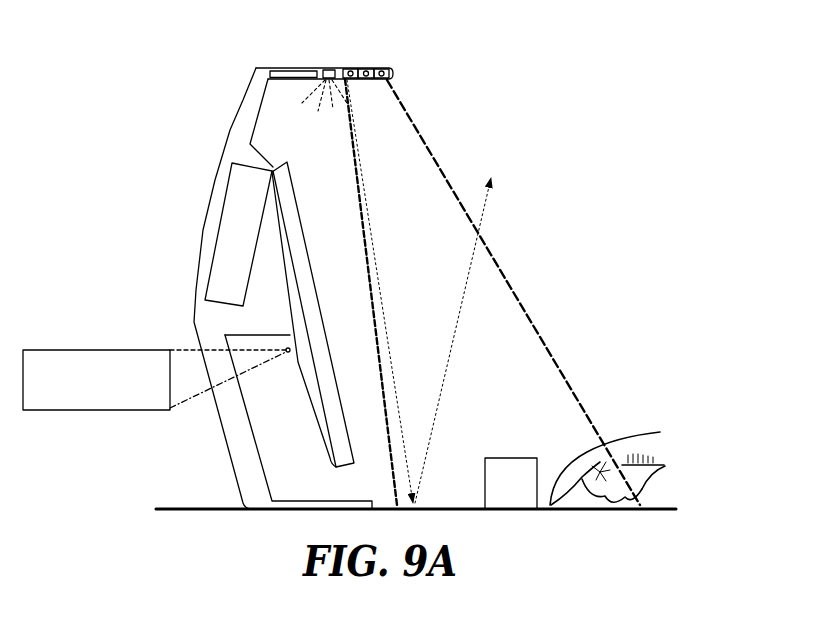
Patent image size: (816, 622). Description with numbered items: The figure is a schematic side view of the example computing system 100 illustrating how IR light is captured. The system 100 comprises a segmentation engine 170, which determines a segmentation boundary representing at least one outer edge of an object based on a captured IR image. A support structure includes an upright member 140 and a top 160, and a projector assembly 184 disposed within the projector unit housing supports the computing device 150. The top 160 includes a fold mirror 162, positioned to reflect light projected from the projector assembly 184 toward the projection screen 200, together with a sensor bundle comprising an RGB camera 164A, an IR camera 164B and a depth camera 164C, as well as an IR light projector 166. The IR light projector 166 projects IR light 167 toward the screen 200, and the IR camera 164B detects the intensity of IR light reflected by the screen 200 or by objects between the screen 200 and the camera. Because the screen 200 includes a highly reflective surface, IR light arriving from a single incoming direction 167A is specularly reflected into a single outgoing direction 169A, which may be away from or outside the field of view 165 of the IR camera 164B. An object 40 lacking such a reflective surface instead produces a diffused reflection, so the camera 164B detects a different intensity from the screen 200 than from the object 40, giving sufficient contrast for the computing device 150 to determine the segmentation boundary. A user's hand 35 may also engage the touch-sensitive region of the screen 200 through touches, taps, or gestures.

The user's hand 35 is at (632, 432).
The object 40 is at (540, 483).
The computing system 100 is at (386, 258).
The upright member 140 is at (252, 288).
The computing device 150 is at (303, 394).
The top 160 is at (422, 256).
The fold mirror 162 is at (279, 72).
The RGB camera 164A is at (377, 68).
The IR camera 164B is at (364, 64).
The depth camera 164C is at (352, 66).
The field of view 165 is at (416, 128).
The IR light projector 166 is at (324, 68).
The IR light 167 is at (302, 103).
The single incoming direction 167A is at (393, 331).
The single outgoing direction 169A is at (454, 390).
The segmentation engine 170 is at (92, 411).
The projector assembly 184 is at (228, 180).
The projection screen 200 is at (669, 512).